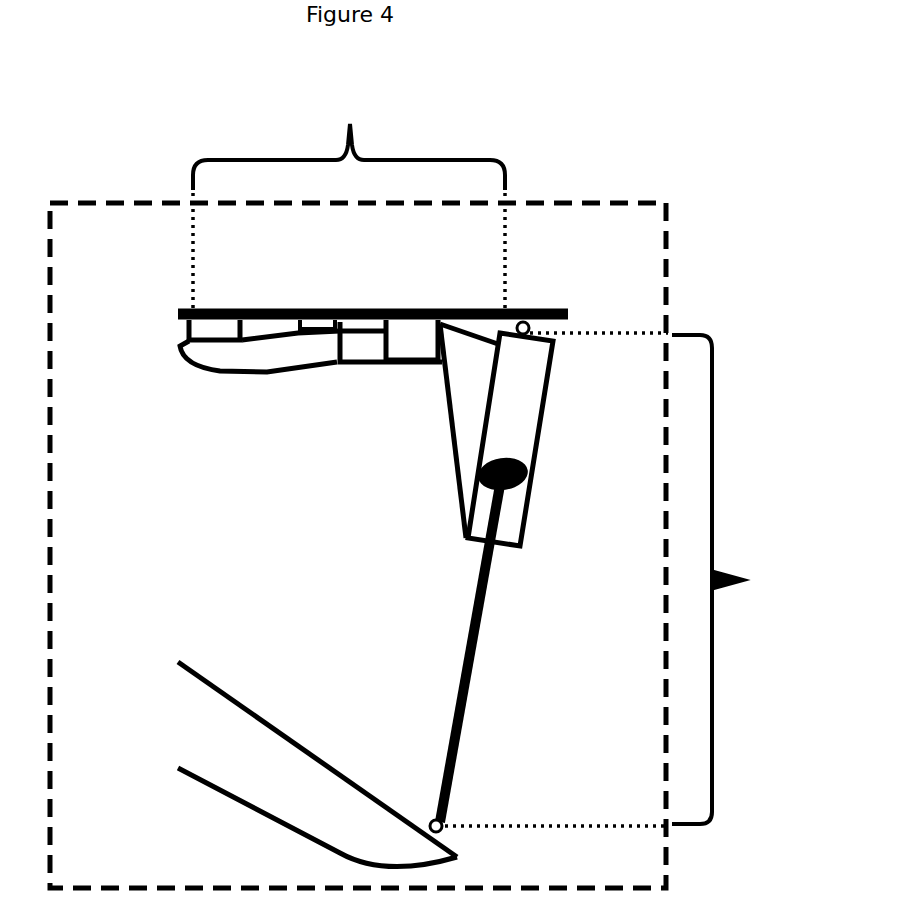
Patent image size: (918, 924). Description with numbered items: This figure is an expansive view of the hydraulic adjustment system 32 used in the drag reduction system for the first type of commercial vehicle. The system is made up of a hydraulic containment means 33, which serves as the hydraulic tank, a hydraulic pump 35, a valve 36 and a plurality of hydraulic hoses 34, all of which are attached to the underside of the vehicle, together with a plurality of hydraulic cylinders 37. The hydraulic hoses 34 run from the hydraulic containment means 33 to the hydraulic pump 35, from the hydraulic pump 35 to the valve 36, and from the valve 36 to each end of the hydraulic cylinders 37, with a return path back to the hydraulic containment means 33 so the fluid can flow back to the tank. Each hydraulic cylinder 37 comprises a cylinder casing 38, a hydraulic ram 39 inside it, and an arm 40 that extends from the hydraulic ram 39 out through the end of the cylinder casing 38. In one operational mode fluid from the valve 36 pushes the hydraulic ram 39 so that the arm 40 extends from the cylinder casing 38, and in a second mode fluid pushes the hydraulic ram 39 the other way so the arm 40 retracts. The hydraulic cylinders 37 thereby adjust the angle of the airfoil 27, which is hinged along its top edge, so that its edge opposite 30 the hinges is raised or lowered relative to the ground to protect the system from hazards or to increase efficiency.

The airfoil 27 is at (317, 764).
The edge opposite 30 is at (465, 858).
The hydraulic adjustment system 32 is at (349, 207).
The hydraulic containment means 33 is at (224, 330).
The hydraulic hoses 34 is at (467, 337).
The hydraulic pump 35 is at (313, 330).
The valve 36 is at (420, 338).
The hydraulic cylinder 37 is at (614, 574).
The cylinder casing 38 is at (463, 533).
The hydraulic ram 39 is at (525, 481).
The arm 40 is at (487, 667).